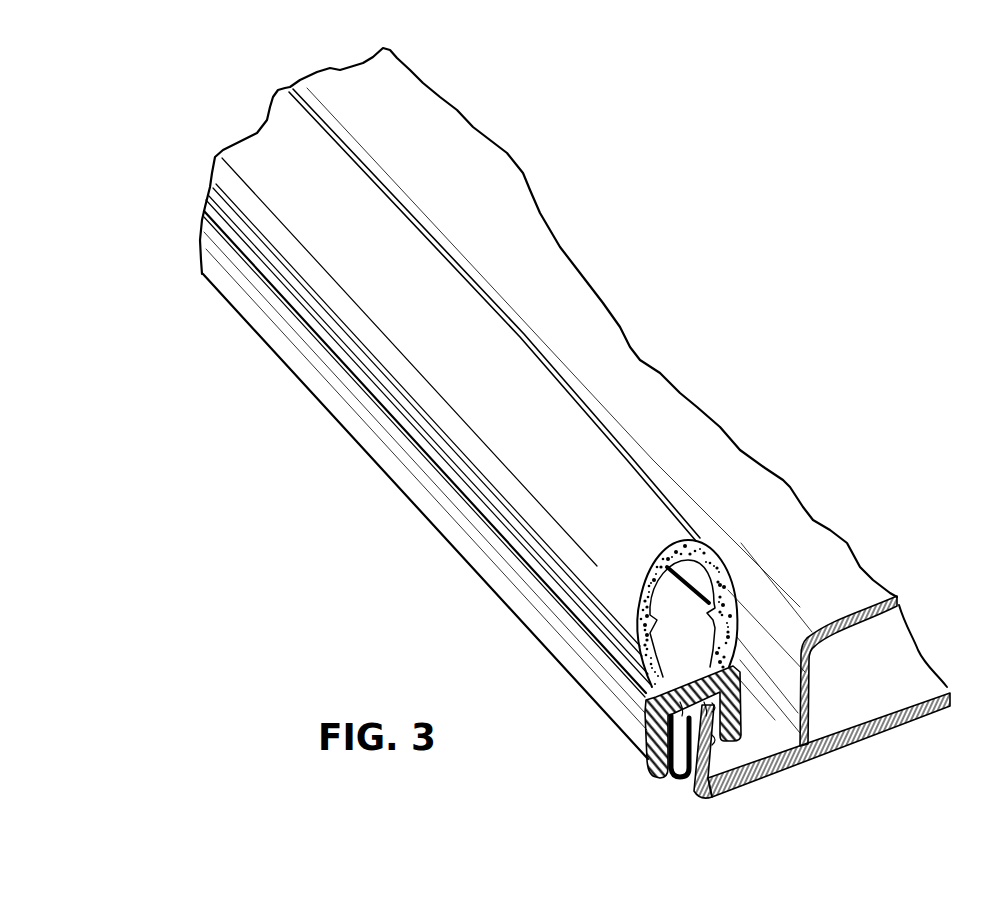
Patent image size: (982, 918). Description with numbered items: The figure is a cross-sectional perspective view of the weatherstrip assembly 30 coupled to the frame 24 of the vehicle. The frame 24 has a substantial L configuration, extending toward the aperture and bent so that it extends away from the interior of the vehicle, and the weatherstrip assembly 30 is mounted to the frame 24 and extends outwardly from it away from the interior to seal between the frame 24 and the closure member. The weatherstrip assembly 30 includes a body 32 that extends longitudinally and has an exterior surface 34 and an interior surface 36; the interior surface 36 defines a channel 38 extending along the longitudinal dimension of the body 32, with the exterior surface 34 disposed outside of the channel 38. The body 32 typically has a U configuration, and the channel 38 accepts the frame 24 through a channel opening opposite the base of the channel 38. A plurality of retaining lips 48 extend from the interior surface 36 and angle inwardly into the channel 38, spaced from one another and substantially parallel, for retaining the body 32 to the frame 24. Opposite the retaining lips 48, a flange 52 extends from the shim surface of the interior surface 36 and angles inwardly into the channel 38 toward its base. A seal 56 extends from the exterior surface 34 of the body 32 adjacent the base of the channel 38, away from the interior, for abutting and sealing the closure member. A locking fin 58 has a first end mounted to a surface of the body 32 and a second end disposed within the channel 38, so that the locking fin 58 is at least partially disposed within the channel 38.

The weatherstrip assembly 30 is at (368, 481).
The frame 24 is at (780, 768).
The body 32 is at (661, 753).
The exterior surface 34 is at (593, 687).
The interior surface 36 is at (708, 700).
The channel 38 is at (683, 700).
The retaining lips 48 is at (712, 751).
The flange 52 is at (680, 778).
The seal 56 is at (689, 540).
The locking fin 58 is at (692, 786).